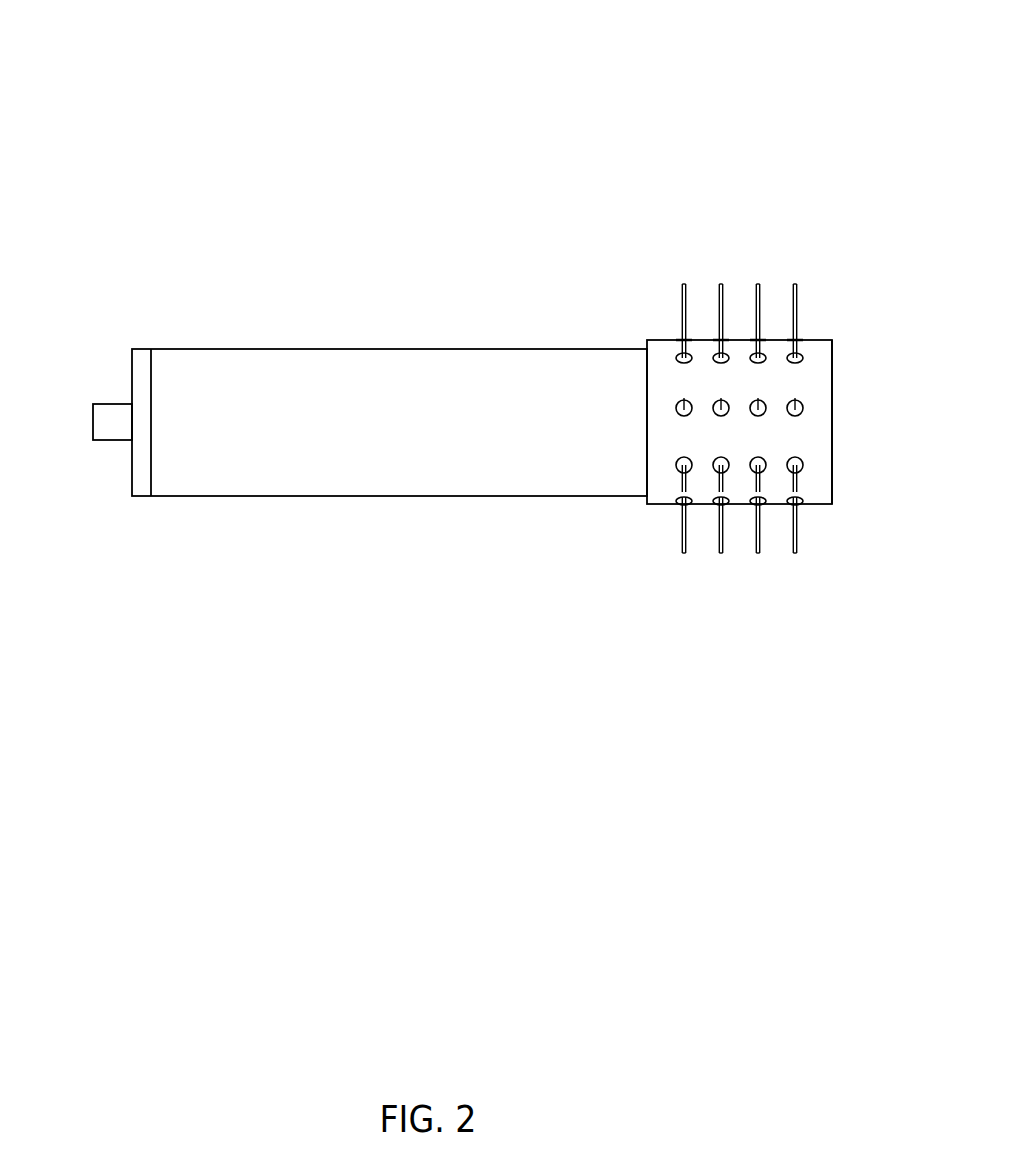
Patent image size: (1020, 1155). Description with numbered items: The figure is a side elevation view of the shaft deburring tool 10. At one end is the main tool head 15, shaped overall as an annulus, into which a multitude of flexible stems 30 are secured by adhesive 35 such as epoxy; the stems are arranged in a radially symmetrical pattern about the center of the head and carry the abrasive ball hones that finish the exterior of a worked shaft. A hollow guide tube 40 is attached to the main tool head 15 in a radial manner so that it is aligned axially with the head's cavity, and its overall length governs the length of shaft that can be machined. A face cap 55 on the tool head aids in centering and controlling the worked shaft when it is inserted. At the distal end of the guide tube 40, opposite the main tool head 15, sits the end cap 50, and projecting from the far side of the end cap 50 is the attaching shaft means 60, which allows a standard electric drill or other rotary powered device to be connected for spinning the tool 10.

The shaft deburring tool 10 is at (178, 98).
The main tool head 15 is at (785, 382).
The flexible stem 30 is at (682, 284).
The adhesive 35 is at (762, 355).
The guide tube 40 is at (302, 390).
The end cap 50 is at (142, 493).
The face cap 55 is at (833, 462).
The attaching shaft means 60 is at (104, 433).